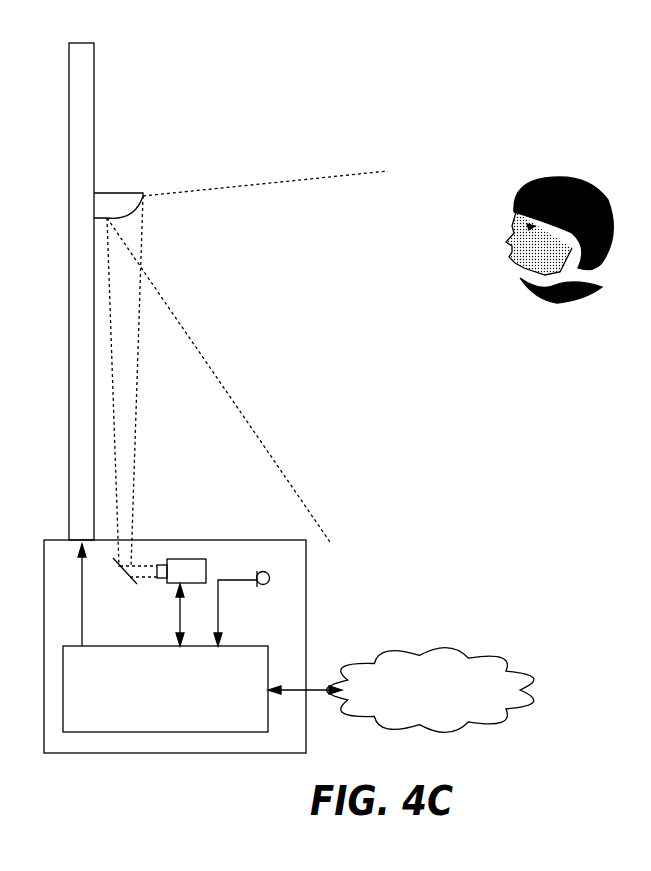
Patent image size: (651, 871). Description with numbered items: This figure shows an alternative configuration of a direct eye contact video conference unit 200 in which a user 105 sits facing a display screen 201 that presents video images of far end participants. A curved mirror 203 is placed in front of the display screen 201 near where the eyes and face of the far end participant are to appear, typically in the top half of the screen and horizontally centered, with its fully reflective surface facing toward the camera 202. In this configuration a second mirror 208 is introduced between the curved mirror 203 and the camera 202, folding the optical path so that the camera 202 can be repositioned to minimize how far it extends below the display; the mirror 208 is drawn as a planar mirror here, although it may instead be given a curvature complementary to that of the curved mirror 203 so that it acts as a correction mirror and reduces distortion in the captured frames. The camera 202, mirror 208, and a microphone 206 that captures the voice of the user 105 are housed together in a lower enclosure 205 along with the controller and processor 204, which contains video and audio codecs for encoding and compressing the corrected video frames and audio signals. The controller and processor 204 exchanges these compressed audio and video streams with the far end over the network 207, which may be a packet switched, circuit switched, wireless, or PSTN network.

The video conference unit 200 is at (218, 79).
The display screen 201 is at (82, 43).
The camera 202 is at (200, 559).
The curved mirror 203 is at (118, 193).
The controller and processor 204 is at (165, 689).
The housing 205 is at (81, 572).
The microphone 206 is at (262, 585).
The network 207 is at (429, 690).
The second mirror 208 is at (115, 560).
The user 105 is at (553, 178).